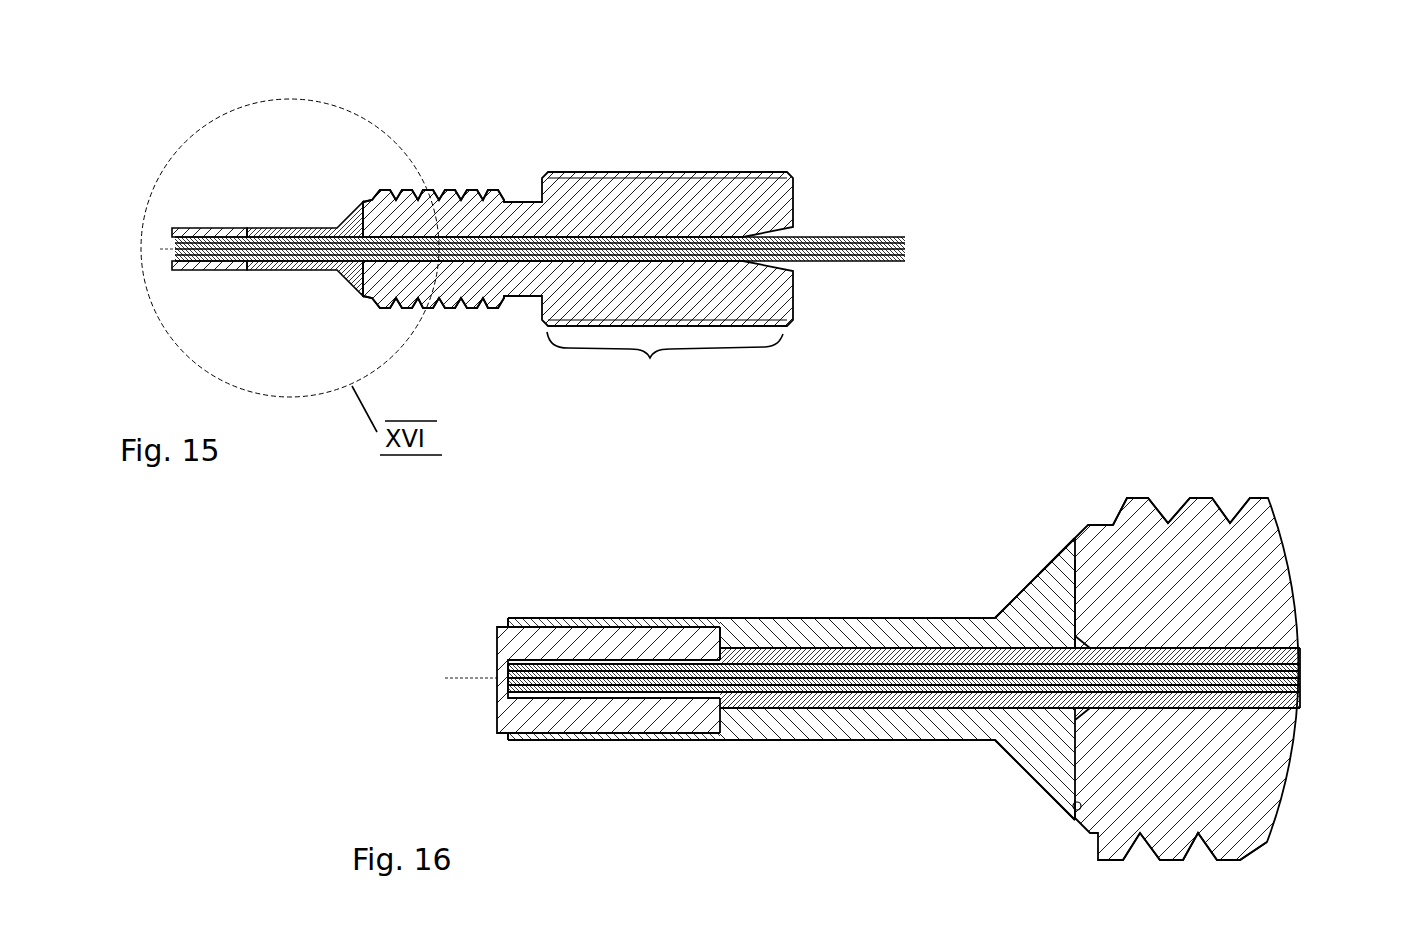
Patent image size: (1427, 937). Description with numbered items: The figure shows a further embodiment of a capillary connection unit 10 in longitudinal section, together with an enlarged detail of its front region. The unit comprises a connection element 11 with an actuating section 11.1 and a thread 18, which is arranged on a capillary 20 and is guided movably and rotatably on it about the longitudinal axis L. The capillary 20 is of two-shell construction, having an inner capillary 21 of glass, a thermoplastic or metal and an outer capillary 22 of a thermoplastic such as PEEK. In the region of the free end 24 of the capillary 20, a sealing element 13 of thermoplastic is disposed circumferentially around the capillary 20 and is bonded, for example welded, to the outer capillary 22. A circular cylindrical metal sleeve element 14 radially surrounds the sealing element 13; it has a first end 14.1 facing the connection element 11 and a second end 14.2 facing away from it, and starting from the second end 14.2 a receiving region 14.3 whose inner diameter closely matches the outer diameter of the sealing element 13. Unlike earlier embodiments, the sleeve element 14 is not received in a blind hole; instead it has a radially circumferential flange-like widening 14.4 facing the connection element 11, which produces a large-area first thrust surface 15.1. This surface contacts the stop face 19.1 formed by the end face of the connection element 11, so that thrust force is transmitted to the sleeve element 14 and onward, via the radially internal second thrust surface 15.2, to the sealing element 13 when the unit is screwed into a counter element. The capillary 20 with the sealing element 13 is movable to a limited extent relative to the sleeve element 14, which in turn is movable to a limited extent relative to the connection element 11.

In FIG. 15, the capillary connection unit 10 is at (572, 88).
In FIG. 15, the connection element 11 is at (657, 173).
In FIG. 16, the connection element 11 is at (1268, 537).
In FIG. 15, the actuating section 11.1 is at (665, 369).
In FIG. 16, the sealing element 13 is at (618, 632).
In FIG. 16, the sleeve element 14 is at (868, 618).
In FIG. 16, the first end 14.1 is at (1078, 827).
In FIG. 16, the second end 14.2 is at (507, 737).
In FIG. 16, the receiving region 14.3 is at (625, 743).
In FIG. 16, the flange-like widening 14.4 is at (1027, 773).
In FIG. 16, the first thrust surface 15.1 is at (1076, 586).
In FIG. 16, the second thrust surface 15.2 is at (718, 641).
In FIG. 15, the thread 18 is at (465, 188).
In FIG. 16, the thread 18 is at (1193, 497).
In FIG. 16, the stop face 19.1 is at (1069, 617).
In FIG. 15, the capillary 20 is at (848, 236).
In FIG. 16, the capillary 20 is at (1263, 640).
In FIG. 16, the inner capillary 21 is at (1300, 677).
In FIG. 16, the outer capillary 22 is at (1300, 657).
In FIG. 16, the free end 24 is at (497, 666).
In FIG. 16, the longitudinal axis L is at (457, 683).